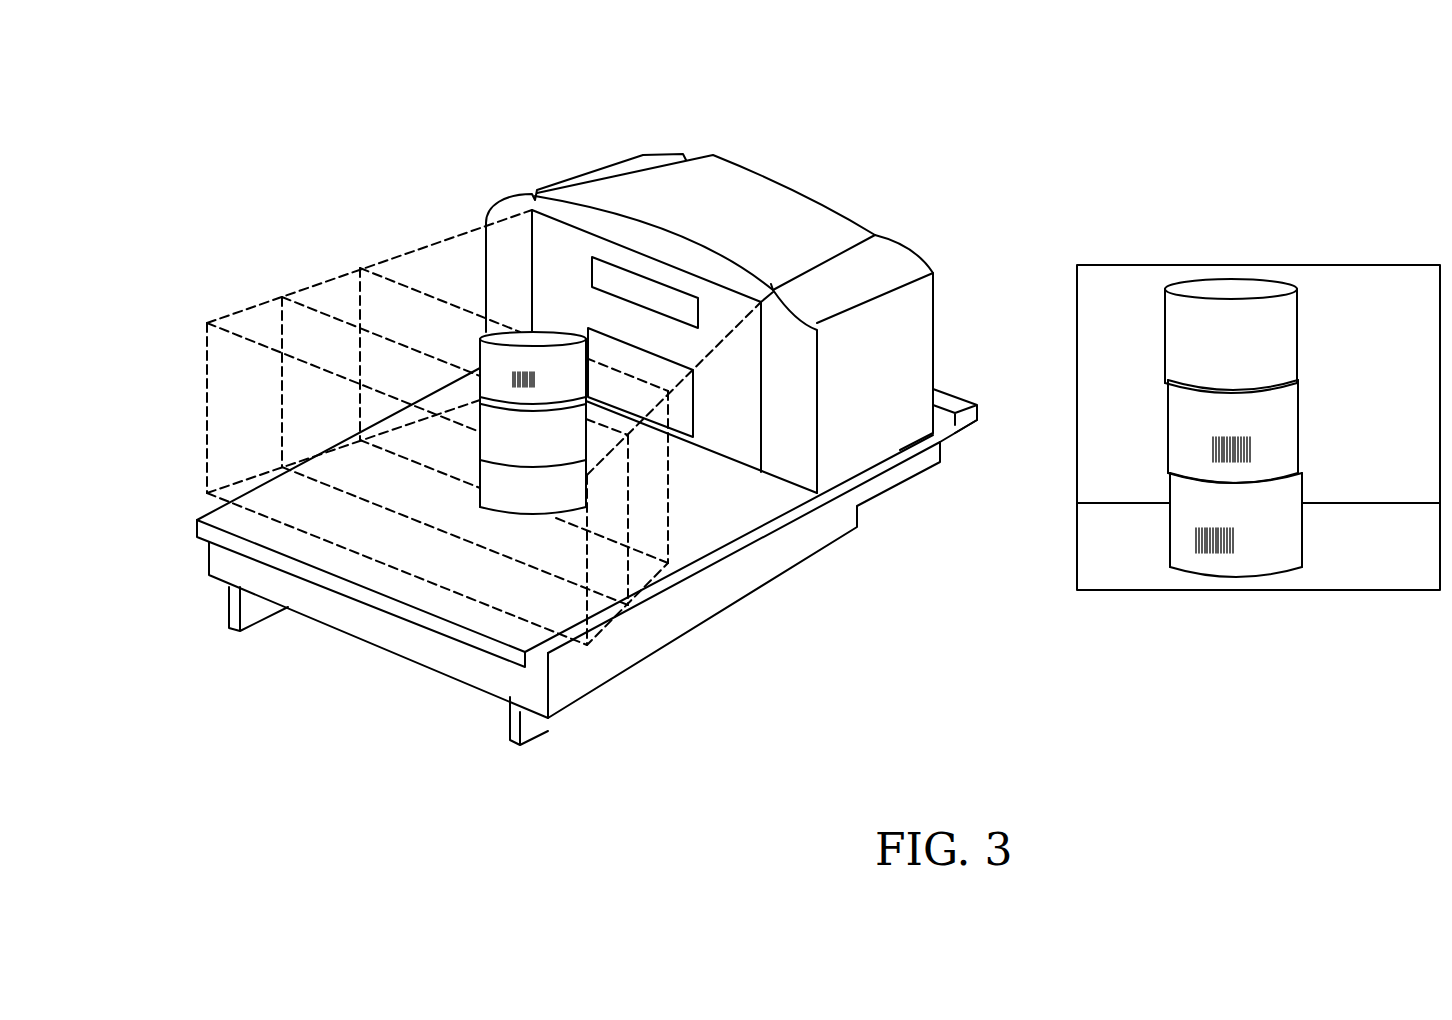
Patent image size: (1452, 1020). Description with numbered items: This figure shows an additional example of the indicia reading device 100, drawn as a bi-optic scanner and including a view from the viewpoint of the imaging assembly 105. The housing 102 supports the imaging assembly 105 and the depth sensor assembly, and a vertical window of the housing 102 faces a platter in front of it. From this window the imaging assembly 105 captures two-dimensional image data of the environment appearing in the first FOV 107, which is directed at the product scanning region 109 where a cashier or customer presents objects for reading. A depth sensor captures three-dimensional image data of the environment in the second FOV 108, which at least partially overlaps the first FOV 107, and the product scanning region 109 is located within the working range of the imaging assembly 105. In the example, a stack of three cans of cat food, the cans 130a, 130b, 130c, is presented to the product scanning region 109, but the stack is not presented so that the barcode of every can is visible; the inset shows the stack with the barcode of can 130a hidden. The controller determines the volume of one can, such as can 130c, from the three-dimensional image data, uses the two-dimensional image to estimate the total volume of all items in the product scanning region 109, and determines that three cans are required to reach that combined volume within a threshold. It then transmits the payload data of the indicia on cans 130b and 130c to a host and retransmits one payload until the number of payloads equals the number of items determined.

The indicia reading device 100 is at (921, 167).
The housing 102 is at (943, 268).
The imaging assembly 105 is at (651, 366).
The first FOV 107 is at (270, 408).
The second FOV 108 is at (598, 653).
The product scanning region 109 is at (671, 581).
The can 130a is at (1317, 325).
The can 130b is at (712, 417).
The can 130c is at (1317, 527).